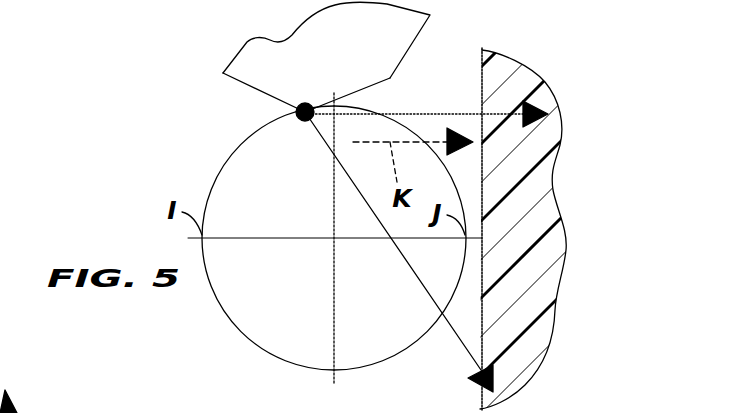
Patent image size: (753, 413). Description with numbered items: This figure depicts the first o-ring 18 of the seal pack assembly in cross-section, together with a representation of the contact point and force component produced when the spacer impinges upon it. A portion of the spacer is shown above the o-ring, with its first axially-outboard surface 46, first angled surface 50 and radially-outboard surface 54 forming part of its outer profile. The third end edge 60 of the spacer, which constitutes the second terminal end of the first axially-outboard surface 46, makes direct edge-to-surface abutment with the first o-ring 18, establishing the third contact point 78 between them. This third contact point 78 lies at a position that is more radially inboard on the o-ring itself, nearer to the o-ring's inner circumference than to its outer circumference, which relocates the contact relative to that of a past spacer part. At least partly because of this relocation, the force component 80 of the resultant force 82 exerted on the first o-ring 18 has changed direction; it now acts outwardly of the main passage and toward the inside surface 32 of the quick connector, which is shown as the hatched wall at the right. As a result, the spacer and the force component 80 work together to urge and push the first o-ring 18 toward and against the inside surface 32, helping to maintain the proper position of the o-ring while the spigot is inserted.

The first o-ring 18 is at (240, 340).
The inside surface 32 is at (477, 398).
The first axially-outboard surface 46 is at (263, 91).
The first angled surface 50 is at (370, 87).
The radially-outboard surface 54 is at (413, 40).
The third end edge 60 is at (305, 103).
The third contact point 78 is at (302, 122).
The force component 80 is at (460, 113).
The resultant force 82 is at (410, 270).